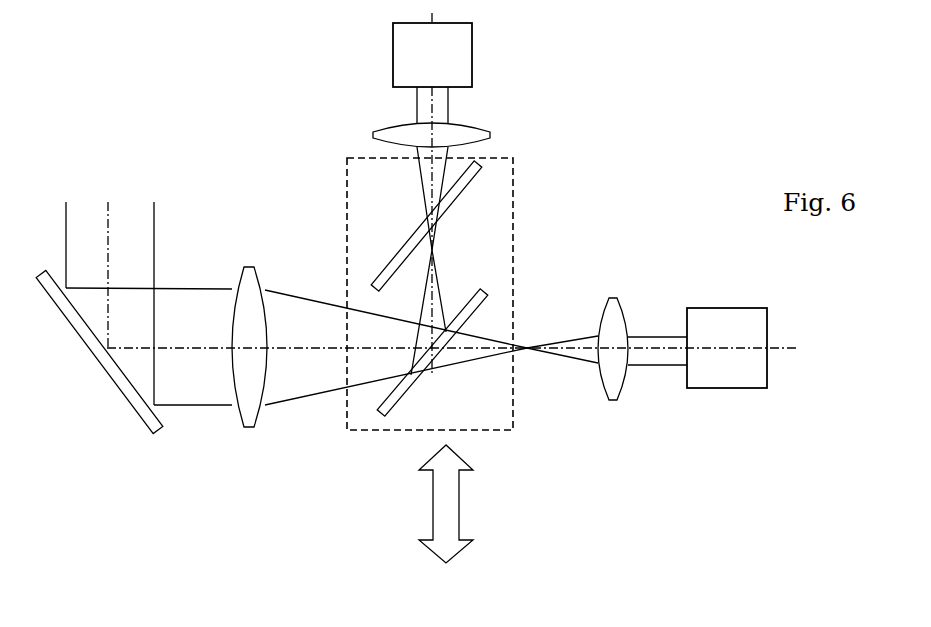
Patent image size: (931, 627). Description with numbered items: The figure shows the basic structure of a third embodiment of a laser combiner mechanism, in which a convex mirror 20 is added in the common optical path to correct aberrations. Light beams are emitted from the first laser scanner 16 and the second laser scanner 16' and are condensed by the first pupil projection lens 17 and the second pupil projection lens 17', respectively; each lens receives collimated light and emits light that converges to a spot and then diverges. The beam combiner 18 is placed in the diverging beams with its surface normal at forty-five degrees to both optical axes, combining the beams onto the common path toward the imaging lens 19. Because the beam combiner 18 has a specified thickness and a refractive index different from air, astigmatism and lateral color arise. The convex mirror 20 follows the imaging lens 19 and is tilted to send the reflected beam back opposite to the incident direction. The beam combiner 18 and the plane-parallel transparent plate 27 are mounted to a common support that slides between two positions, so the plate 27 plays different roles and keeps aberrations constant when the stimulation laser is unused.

The second laser scanner 16' is at (475, 55).
The second pupil projection lens 17' is at (476, 118).
The plane-parallel transparent plate 27 is at (463, 190).
The beam combiner 18 is at (397, 408).
The convex mirror 20 is at (118, 388).
The imaging lens 19 is at (243, 430).
The first pupil projection lens 17 is at (613, 396).
The first laser scanner 16 is at (727, 394).